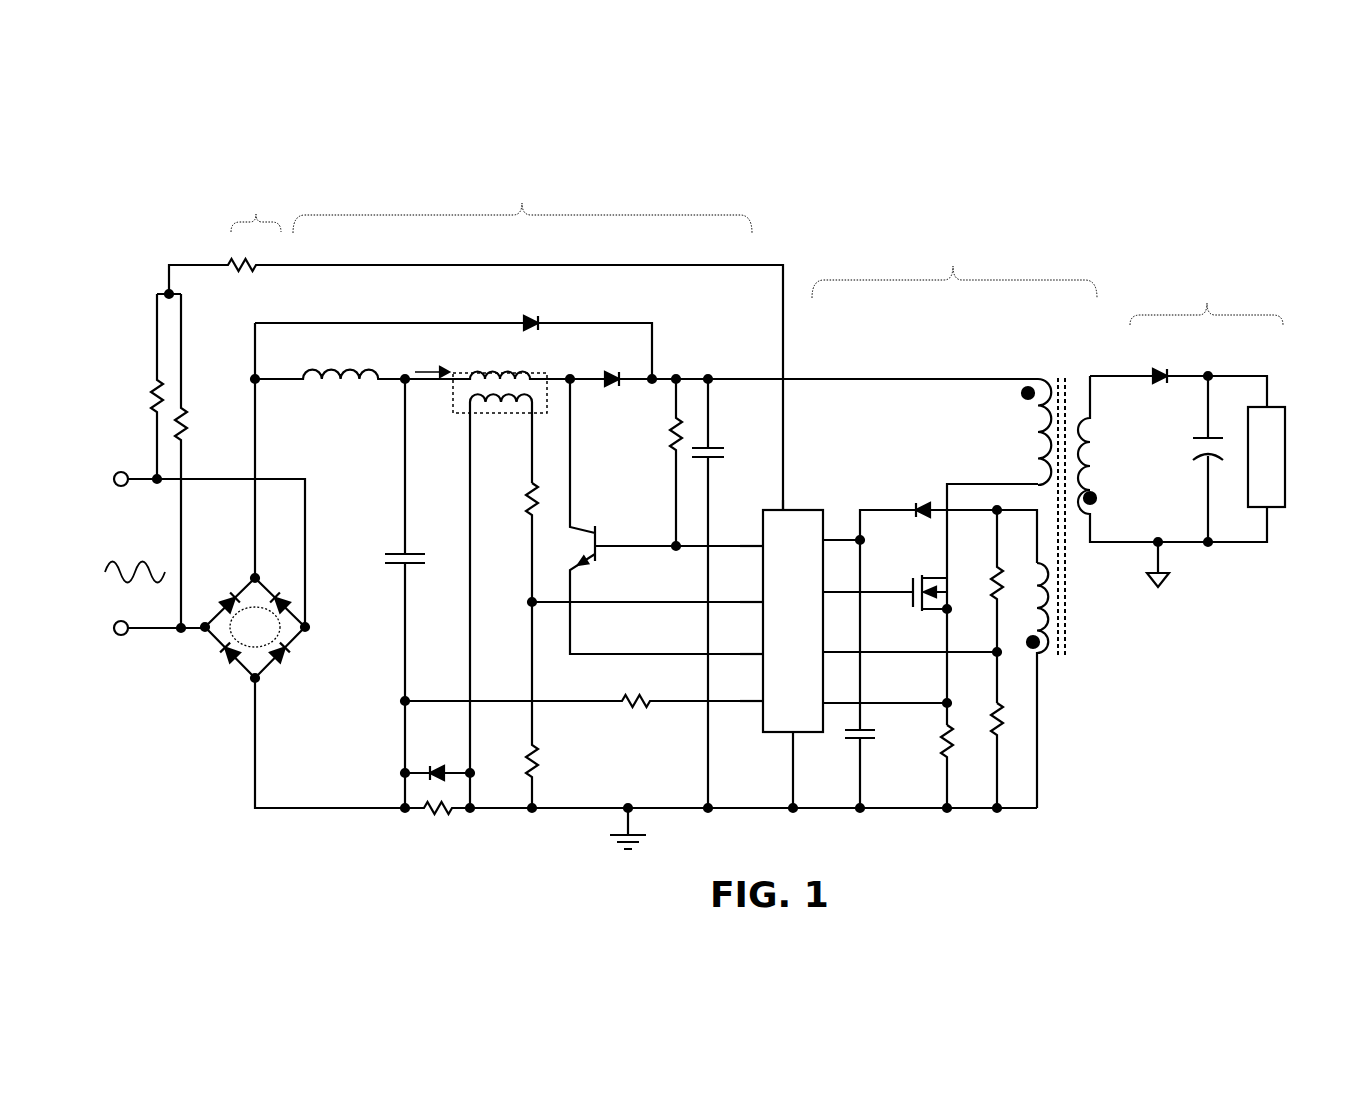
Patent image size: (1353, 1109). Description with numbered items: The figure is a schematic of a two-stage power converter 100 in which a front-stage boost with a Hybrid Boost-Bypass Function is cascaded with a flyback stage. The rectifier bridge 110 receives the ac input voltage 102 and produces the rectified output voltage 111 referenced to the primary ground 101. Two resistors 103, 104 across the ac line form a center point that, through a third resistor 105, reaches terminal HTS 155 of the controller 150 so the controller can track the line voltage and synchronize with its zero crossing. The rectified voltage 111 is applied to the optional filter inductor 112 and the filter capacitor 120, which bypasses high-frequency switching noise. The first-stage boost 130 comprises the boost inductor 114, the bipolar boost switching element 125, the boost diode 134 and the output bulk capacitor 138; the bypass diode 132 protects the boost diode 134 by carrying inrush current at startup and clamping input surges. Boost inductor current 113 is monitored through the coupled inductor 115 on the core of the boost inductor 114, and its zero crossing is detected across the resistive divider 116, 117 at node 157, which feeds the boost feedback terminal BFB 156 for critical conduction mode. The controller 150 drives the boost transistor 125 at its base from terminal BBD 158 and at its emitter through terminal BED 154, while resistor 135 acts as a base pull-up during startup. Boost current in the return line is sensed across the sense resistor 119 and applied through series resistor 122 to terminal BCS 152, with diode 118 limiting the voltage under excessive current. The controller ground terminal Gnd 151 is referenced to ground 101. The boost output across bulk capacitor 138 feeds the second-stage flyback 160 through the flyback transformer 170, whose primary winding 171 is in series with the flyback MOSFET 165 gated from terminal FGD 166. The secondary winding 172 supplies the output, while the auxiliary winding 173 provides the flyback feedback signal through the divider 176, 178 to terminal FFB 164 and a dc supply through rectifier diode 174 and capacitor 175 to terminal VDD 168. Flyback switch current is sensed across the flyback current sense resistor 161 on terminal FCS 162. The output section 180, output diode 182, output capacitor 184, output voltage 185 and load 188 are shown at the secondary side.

The two-stage power converter 100 is at (771, 164).
The primary power ground 101 is at (606, 840).
The VAC input voltage 102 is at (113, 540).
The resistor 103 is at (146, 391).
The resistor 104 is at (192, 420).
The third resistor 105 is at (238, 265).
The rectifier bridge 110 is at (301, 194).
The rectified output VREC 111 is at (297, 407).
The filter inductor LF 112 is at (321, 370).
The boost inductor current IL 113 is at (434, 364).
The boost inductor LB 114 is at (502, 372).
The coupled inductor 115 is at (509, 408).
The resistor of resistive divider 116 is at (530, 494).
The resistor of resistive divider 117 is at (530, 762).
The diode 118 is at (442, 766).
The sense resistor 119 is at (448, 820).
The filter capacitor CF 120 is at (390, 548).
The series resistor 122 is at (648, 712).
The boost switching element QB 125 is at (597, 524).
The first-stage boost 130 is at (532, 196).
The bypass diode Dbp 132 is at (522, 313).
The boost diode DB 134 is at (614, 394).
The resistor 135 is at (670, 441).
The bulk capacitor 138 is at (718, 448).
The controller 150 is at (767, 730).
The ground terminal Gnd 151 is at (806, 753).
The terminal BCS 152 is at (747, 687).
The terminal BED 154 is at (747, 638).
The terminal HTS 155 is at (801, 491).
The boost feedback terminal BFB 156 is at (747, 586).
The node 157 is at (521, 600).
The terminal BBD 158 is at (747, 535).
The second-stage flyback 160 is at (1040, 254).
The flyback current sense resistor 161 is at (936, 744).
The terminal FCS 162 is at (848, 682).
The terminal FFB 164 is at (848, 632).
The flyback switching element MF 165 is at (944, 570).
The terminal FGD 166 is at (848, 584).
The terminal VDD 168 is at (845, 517).
The transformer T1 170 is at (1048, 364).
The primary winding 171 is at (1032, 431).
The secondary winding 172 is at (1080, 458).
The auxiliary winding 173 is at (1074, 666).
The rectifier diode 174 is at (915, 498).
The capacitor 175 is at (876, 752).
The resistor of resistive divider 176 is at (984, 579).
The resistor of resistive divider 178 is at (982, 720).
The output stage 180 is at (1232, 292).
The output rectifier diode 182 is at (1162, 360).
The output capacitor Co 184 is at (1186, 456).
The output voltage Vo 185 is at (1258, 355).
The load 188 is at (1273, 396).